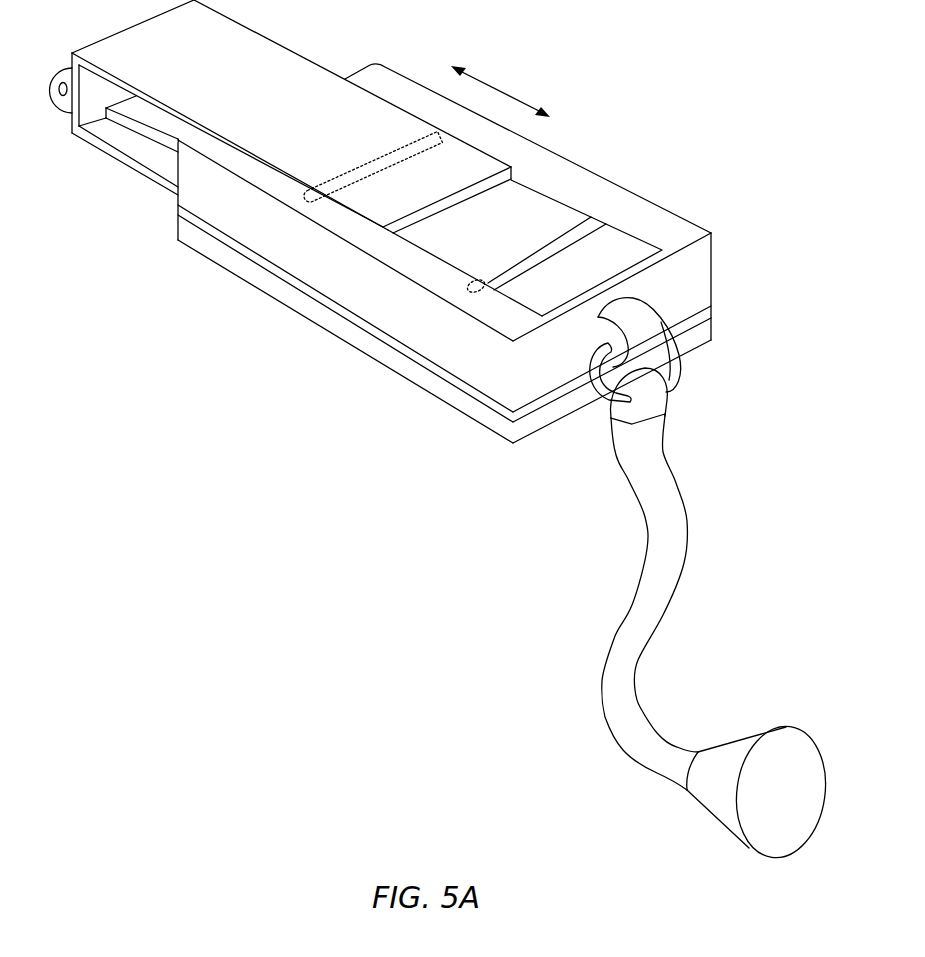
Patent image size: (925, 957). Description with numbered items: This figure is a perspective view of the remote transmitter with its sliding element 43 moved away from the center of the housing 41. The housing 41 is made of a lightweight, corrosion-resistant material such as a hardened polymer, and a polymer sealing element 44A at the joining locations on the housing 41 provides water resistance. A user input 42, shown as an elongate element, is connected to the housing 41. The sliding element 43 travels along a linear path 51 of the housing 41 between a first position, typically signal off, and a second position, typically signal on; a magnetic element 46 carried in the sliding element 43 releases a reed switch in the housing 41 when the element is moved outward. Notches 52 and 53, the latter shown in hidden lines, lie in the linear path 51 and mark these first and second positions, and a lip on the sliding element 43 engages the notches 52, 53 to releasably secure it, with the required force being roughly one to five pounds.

The housing 41 is at (628, 190).
The user input 42 is at (617, 648).
The sliding element 43 is at (235, 23).
The polymer sealing element 44A is at (438, 375).
The magnetic element 46 is at (62, 72).
The linear path 51 is at (518, 205).
The notch 52 is at (553, 247).
The notch 53 is at (387, 160).